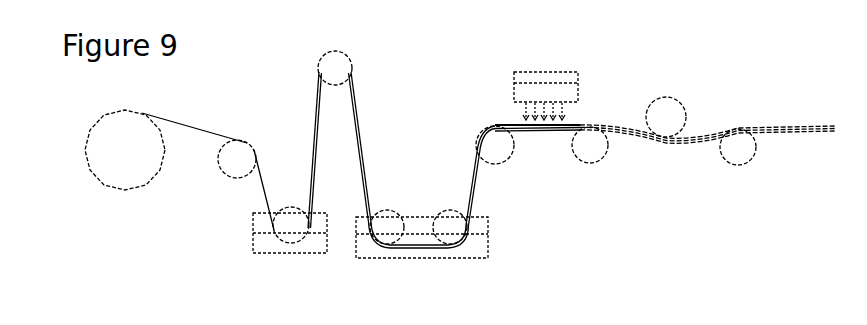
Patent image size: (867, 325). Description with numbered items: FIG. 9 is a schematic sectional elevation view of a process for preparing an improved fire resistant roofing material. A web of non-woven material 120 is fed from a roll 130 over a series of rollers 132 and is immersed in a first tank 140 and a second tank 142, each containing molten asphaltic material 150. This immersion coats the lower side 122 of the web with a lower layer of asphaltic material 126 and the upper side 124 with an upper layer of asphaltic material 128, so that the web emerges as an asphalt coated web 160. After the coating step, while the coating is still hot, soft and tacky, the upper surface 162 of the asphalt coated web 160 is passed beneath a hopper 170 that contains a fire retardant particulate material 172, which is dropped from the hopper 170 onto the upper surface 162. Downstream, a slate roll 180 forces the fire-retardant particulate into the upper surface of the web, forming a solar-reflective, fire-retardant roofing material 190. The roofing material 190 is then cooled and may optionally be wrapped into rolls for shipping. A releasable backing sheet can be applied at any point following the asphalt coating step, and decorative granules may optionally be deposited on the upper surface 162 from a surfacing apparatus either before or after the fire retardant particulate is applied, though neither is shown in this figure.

The web of non-woven material 120 is at (199, 130).
The lower side 122 is at (199, 132).
The upper side 124 is at (246, 142).
The lower layer of asphaltic material 126 is at (315, 122).
The upper layer of asphaltic material 128 is at (363, 158).
The roll 130 is at (113, 137).
The rollers 132 is at (331, 68).
The first tank 140 is at (253, 227).
The second tank 142 is at (488, 231).
The molten asphaltic material 150 is at (370, 270).
The asphalt coated web 160 is at (542, 130).
The upper surface 162 is at (484, 137).
The hopper 170 is at (537, 78).
The fire retardant particulate material 172 is at (567, 93).
The slate roll 180 is at (667, 119).
The solar-reflective, fire-retardant roofing material 190 is at (806, 124).